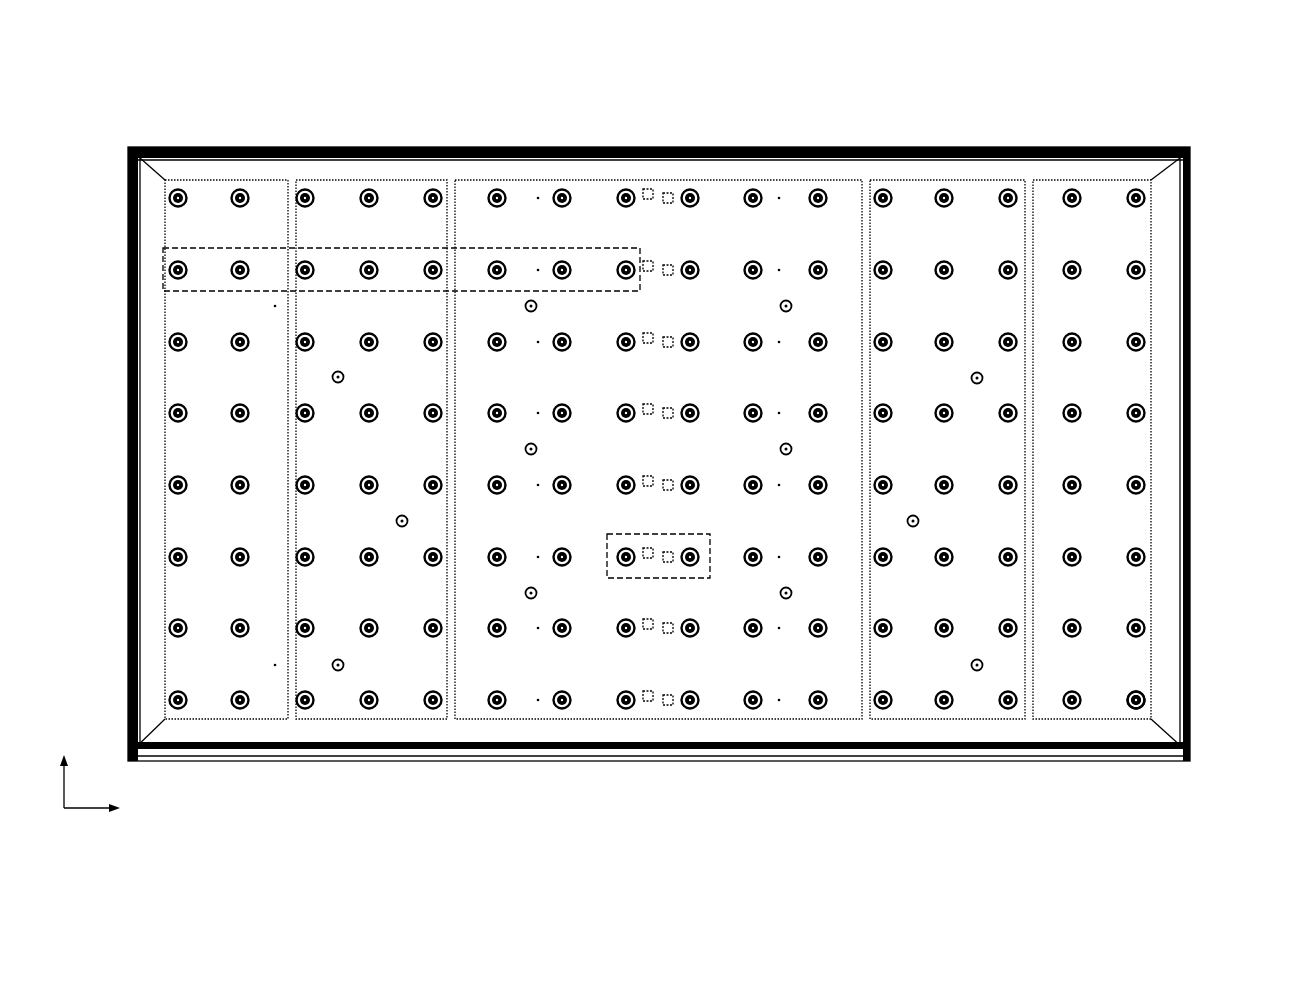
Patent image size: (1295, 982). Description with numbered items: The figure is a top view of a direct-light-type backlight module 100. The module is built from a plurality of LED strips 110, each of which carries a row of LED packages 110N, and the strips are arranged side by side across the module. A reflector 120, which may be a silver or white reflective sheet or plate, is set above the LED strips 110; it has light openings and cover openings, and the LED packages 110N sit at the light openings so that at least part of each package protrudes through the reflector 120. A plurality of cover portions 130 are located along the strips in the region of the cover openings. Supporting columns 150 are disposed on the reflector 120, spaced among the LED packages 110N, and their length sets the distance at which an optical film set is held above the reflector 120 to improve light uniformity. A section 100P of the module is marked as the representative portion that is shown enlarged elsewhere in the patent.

The direct-light-type backlight module 100 is at (150, 73).
The LED strip 110 is at (342, 248).
The LED package 110N is at (1145, 697).
The reflector 120 is at (1132, 241).
The cover portion 130 is at (646, 192).
The supporting column 150 is at (986, 376).
The section of the direct-light-type backlight module 100P is at (607, 578).